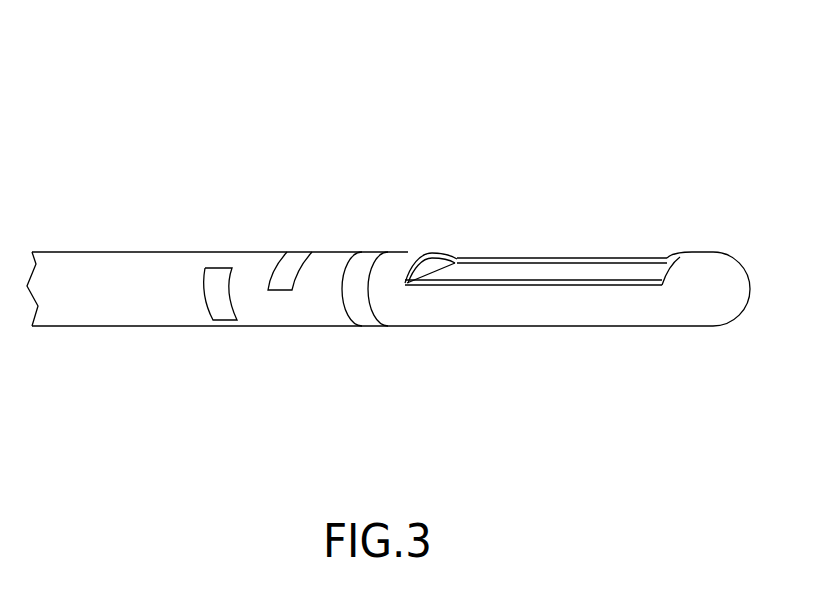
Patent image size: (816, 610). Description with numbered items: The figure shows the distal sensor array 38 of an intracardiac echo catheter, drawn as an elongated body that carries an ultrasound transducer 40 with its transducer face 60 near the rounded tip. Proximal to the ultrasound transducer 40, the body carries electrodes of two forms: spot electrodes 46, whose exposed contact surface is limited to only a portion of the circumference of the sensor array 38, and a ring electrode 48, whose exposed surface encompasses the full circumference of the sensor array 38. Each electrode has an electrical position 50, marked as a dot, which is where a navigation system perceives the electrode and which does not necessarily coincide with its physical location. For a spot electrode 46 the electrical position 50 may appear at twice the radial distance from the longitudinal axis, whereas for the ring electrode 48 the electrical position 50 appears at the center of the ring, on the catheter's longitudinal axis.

The sensor array 38 is at (577, 107).
The ultrasound transducer 40 is at (561, 326).
The spot type electrodes 46 is at (292, 252).
The ring type electrode 48 is at (375, 328).
The electrical position 50 is at (292, 227).
The transducer face 60 is at (583, 268).